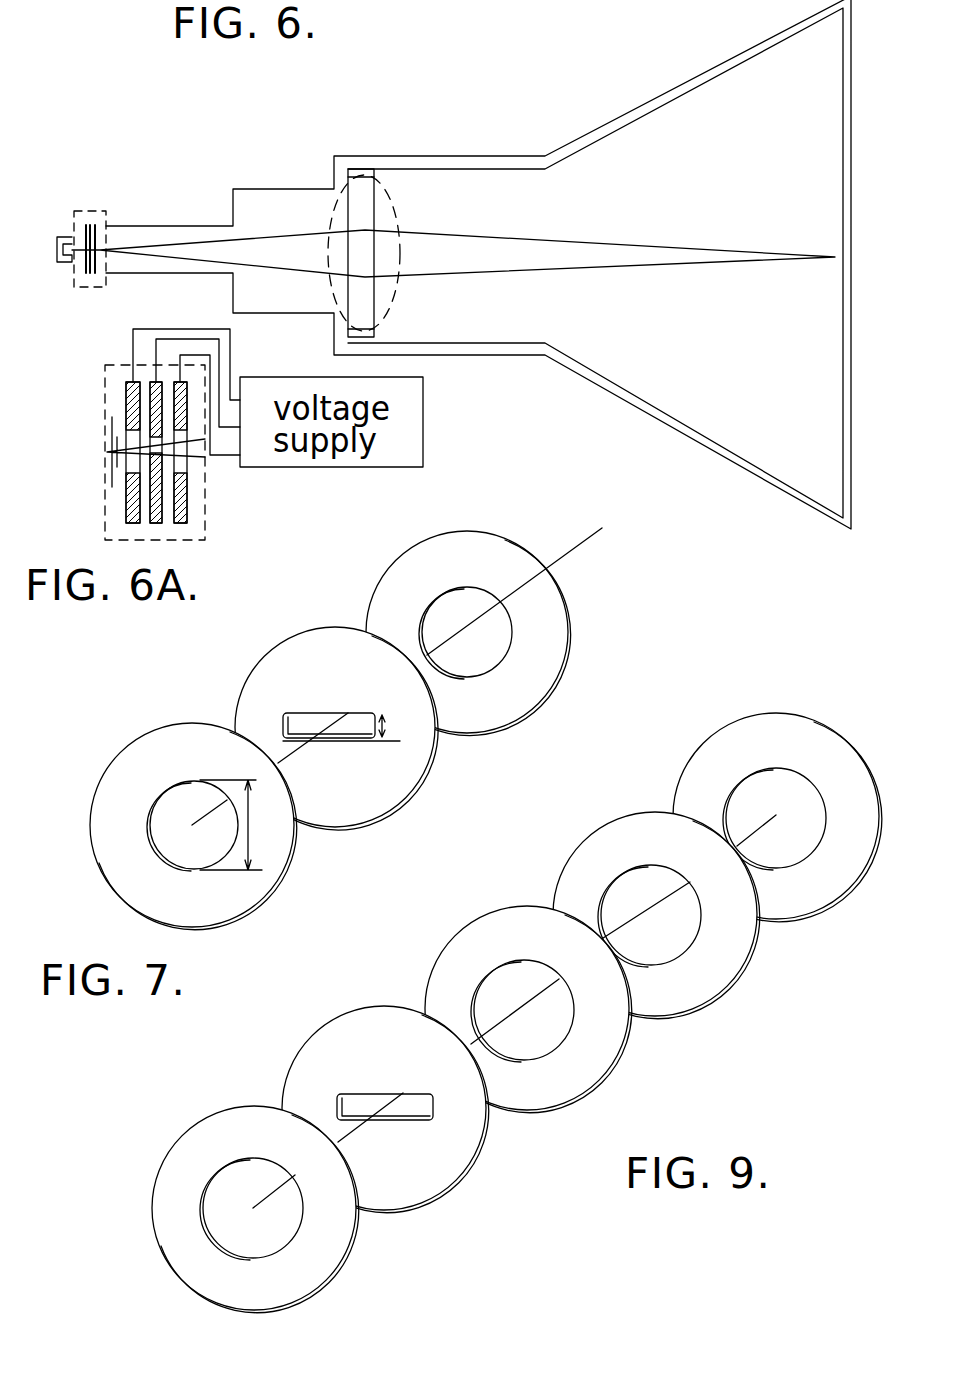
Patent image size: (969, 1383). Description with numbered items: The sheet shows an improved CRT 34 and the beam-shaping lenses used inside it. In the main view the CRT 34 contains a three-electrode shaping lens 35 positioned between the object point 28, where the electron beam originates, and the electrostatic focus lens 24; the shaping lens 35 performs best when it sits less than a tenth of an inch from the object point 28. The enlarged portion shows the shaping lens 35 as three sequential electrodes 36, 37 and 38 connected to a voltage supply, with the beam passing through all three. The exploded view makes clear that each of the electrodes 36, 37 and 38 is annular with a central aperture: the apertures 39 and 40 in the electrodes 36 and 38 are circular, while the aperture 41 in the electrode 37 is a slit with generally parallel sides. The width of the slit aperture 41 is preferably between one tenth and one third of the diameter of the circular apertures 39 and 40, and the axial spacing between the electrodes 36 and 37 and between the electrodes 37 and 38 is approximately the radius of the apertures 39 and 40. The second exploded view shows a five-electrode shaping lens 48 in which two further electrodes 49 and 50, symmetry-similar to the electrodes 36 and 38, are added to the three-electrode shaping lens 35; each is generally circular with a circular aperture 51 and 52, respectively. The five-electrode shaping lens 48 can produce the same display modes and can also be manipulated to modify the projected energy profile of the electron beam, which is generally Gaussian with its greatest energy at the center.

In FIG. 6, the electrostatic focus lens 24 is at (361, 172).
In FIG. 6, the object point 28 is at (68, 240).
In FIG. 6, the CRT 34 is at (522, 107).
In FIG. 6, the three-electrode shaping lens 35 is at (112, 207).
In FIG. 7, the three-electrode shaping lens 35 is at (320, 546).
In FIG. 6, the electrode 36 is at (87, 224).
In FIG. 7, the electrode 36 is at (184, 800).
In FIG. 9, the electrode 36 is at (255, 1177).
In FIG. 6, the electrode 37 is at (90, 275).
In FIG. 7, the electrode 37 is at (336, 703).
In FIG. 9, the electrode 37 is at (385, 1076).
In FIG. 6, the electrode 38 is at (97, 272).
In FIG. 7, the electrode 38 is at (484, 608).
In FIG. 9, the electrode 38 is at (528, 988).
In FIG. 7, the aperture 39 is at (185, 817).
In FIG. 9, the aperture 39 is at (246, 1178).
In FIG. 7, the aperture 40 is at (468, 623).
In FIG. 9, the aperture 40 is at (518, 983).
In FIG. 7, the aperture 41 is at (322, 720).
In FIG. 9, the aperture 41 is at (380, 1100).
In FIG. 9, the five-electrode shaping lens 48 is at (509, 835).
In FIG. 9, the electrode 49 is at (656, 882).
In FIG. 9, the electrode 50 is at (777, 798).
In FIG. 9, the aperture 51 is at (652, 882).
In FIG. 9, the aperture 52 is at (790, 783).